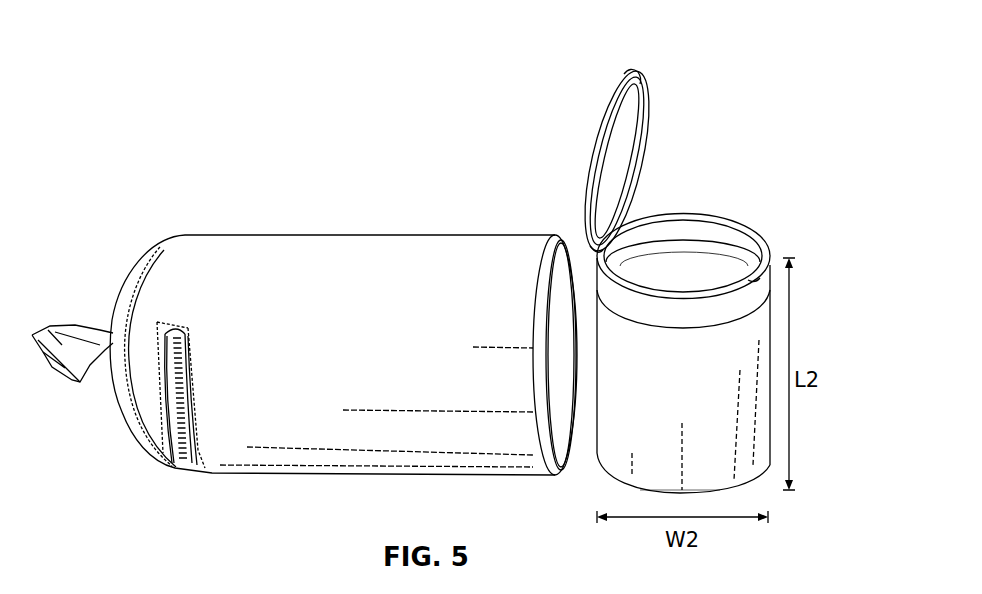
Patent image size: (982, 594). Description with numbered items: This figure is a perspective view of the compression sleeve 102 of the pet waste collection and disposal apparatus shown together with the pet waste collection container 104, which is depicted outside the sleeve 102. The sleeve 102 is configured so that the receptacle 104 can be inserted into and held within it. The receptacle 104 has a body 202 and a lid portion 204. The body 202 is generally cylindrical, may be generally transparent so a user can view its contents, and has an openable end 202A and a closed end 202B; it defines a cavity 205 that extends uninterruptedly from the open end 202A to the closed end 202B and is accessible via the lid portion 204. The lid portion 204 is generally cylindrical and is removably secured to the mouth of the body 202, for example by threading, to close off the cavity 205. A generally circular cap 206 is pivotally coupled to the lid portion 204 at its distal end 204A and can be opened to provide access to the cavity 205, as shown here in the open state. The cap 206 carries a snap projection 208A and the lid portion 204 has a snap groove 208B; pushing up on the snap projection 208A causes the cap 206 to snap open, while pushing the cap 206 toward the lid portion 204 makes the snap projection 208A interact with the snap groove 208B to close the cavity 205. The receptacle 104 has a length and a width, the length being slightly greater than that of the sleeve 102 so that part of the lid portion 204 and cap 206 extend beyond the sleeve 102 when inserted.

The sleeve 102 is at (333, 232).
The container 104 is at (664, 300).
The body 202 is at (767, 480).
The openable end 202A is at (638, 257).
The closed end 202B is at (646, 510).
The lid portion 204 is at (764, 227).
The distal end 204A is at (593, 252).
The cavity 205 is at (708, 256).
The cap 206 is at (595, 162).
The snap projection 208A is at (628, 77).
The snap groove 208B is at (755, 280).